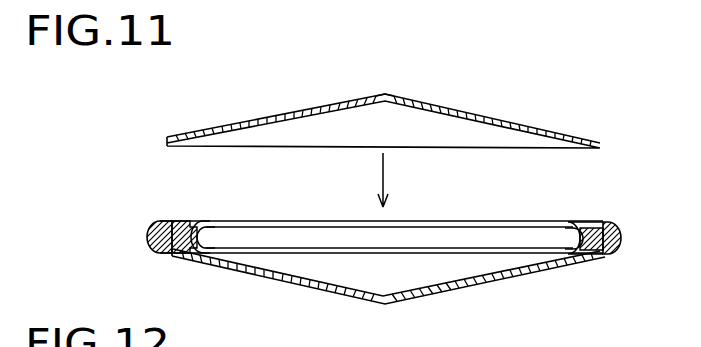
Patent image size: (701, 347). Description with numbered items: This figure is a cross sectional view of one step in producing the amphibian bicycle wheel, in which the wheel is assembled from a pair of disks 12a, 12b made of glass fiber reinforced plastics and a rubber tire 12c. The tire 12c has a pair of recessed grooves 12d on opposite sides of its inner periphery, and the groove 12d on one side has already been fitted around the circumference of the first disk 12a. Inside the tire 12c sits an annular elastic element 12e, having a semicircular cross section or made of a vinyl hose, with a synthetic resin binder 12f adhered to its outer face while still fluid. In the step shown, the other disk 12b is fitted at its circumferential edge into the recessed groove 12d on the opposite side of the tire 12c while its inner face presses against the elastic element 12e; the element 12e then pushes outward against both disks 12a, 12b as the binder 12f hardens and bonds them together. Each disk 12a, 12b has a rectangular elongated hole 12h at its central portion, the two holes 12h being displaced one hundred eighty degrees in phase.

The disk 12a is at (484, 281).
The disk 12b is at (449, 110).
The tire 12c is at (165, 251).
The recessed groove 12d is at (173, 221).
The annular elastic element 12e is at (205, 222).
The binder 12f is at (565, 223).
The rectangular elongated hole 12h is at (385, 94).